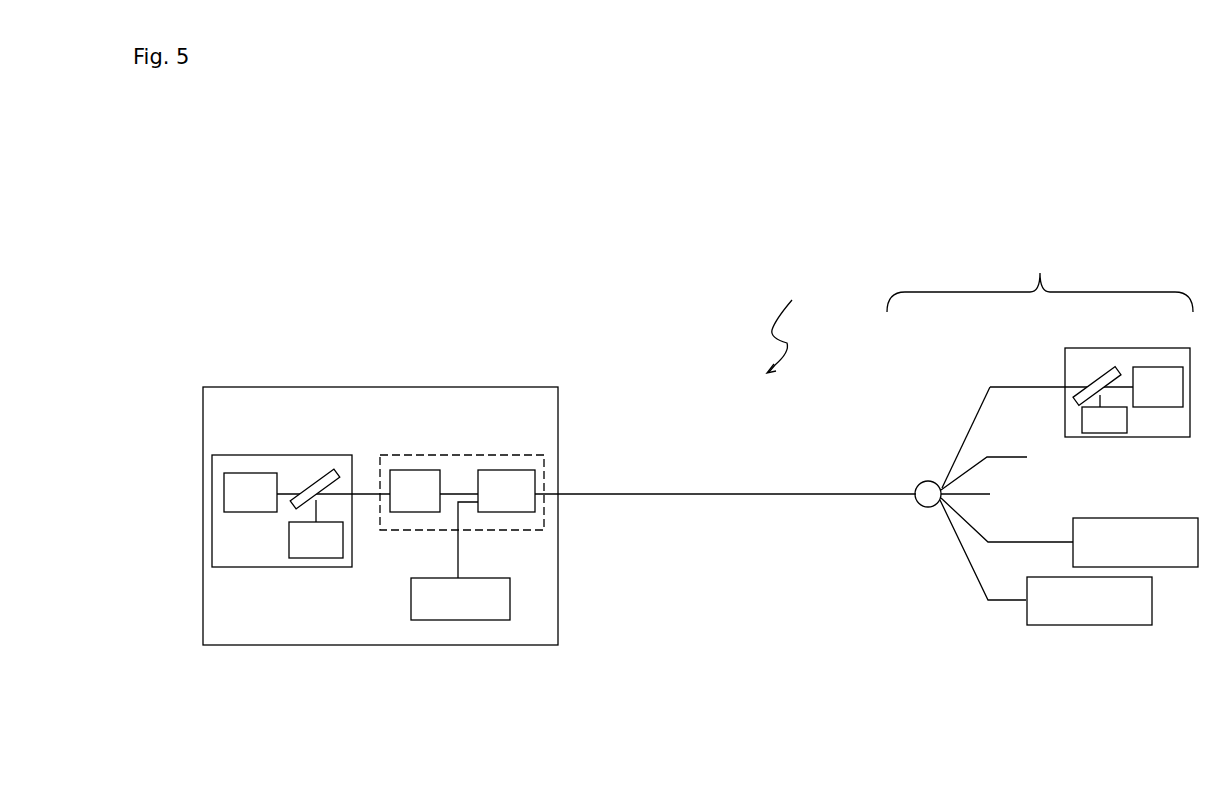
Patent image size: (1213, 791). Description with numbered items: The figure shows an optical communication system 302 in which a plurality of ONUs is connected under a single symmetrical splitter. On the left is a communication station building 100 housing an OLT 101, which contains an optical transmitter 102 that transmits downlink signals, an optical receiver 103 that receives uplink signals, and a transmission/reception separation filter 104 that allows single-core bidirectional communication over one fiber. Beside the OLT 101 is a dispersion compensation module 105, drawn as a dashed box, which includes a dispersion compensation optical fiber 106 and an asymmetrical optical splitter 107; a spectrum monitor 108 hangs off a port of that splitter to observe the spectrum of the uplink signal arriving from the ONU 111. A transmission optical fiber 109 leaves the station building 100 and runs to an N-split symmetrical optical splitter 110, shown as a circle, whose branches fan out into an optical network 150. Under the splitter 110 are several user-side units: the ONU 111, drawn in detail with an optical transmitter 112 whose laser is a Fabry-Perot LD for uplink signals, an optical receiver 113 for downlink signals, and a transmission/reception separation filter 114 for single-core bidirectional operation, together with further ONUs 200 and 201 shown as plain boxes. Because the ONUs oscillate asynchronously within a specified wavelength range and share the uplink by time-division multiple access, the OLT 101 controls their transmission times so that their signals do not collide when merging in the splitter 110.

The communication station building 100 is at (451, 382).
The OLT 101 is at (288, 457).
The optical transmitter 102 is at (226, 470).
The optical receiver 103 is at (300, 563).
The transmission/reception separation filter 104 is at (330, 470).
The dispersion compensation module 105 is at (434, 452).
The dispersion compensation optical fiber 106 is at (423, 512).
The asymmetrical optical splitter 107 is at (528, 512).
The spectrum monitor 108 is at (413, 595).
The transmission optical fiber 109 is at (625, 487).
The N-split symmetrical optical splitter 110 is at (912, 506).
The ONU 111 is at (1100, 345).
The optical transmitter 112 is at (1180, 410).
The optical receiver 113 is at (1097, 440).
The transmission/reception separation filter 114 is at (1098, 368).
The optical network 150 is at (1040, 279).
The ONU 200 is at (1118, 518).
The ONU 201 is at (1128, 625).
The optical communication system 302 is at (783, 328).